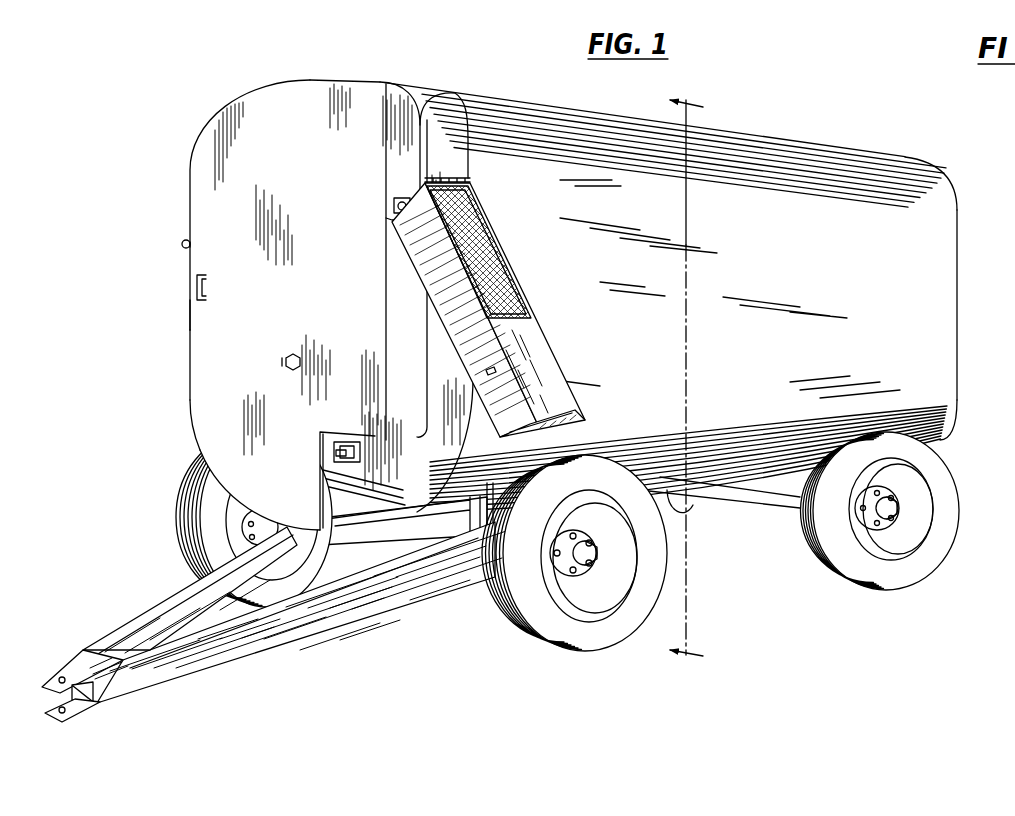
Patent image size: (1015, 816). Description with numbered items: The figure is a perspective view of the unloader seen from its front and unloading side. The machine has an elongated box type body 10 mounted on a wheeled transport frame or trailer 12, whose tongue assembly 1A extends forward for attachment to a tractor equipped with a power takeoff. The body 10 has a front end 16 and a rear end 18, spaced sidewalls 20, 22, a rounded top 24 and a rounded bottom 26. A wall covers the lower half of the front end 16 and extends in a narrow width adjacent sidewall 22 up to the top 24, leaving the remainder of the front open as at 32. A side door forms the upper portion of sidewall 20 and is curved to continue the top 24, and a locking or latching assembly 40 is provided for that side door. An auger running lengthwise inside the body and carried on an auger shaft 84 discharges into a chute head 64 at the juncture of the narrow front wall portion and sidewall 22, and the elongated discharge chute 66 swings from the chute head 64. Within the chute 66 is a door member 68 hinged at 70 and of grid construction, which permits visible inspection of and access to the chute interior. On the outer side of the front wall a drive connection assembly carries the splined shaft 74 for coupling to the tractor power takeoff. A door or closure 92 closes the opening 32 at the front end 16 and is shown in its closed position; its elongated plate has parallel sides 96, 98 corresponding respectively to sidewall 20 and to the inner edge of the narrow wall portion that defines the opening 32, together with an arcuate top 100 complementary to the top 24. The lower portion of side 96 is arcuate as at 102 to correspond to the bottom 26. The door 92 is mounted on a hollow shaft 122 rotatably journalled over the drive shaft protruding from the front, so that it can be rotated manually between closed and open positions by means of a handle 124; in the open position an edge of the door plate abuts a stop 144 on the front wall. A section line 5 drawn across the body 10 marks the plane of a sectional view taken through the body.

The box type body 10 is at (870, 139).
The wheeled transport frame or trailer 12 is at (789, 513).
The front end 16 is at (186, 196).
The rear end 18 is at (972, 297).
The sidewall 20 is at (192, 352).
The sidewall 22 is at (952, 344).
The rounded top 24 is at (953, 197).
The rounded bottom 26 is at (946, 443).
The opening 32 is at (189, 311).
The locking or latching assembly 40 is at (178, 245).
The chute head 64 is at (380, 150).
The elongated discharge chute 66 is at (534, 327).
The door member 68 is at (514, 276).
The hinge 70 is at (472, 183).
The splined shaft 74 is at (333, 455).
The auger shaft 84 is at (396, 205).
The door or closure 92 is at (191, 430).
The plate side 96 is at (202, 393).
The plate side 98 is at (418, 375).
The arcuate top 100 is at (355, 80).
The arcuate lower portion 102 is at (222, 496).
The hollow shaft 122 is at (284, 363).
The handle 124 is at (194, 281).
The stop 144 is at (489, 370).
The tongue 1A is at (93, 626).
The section line 5- 5 is at (686, 379).